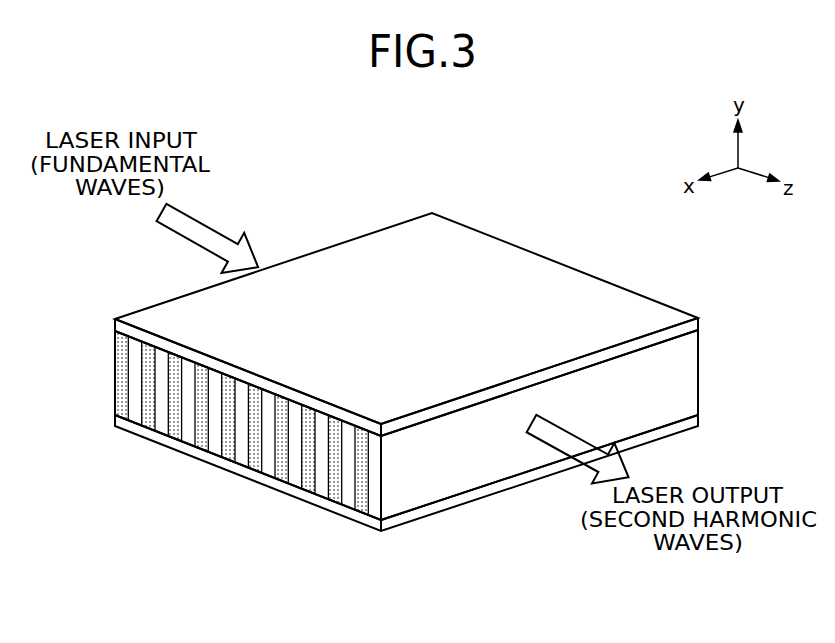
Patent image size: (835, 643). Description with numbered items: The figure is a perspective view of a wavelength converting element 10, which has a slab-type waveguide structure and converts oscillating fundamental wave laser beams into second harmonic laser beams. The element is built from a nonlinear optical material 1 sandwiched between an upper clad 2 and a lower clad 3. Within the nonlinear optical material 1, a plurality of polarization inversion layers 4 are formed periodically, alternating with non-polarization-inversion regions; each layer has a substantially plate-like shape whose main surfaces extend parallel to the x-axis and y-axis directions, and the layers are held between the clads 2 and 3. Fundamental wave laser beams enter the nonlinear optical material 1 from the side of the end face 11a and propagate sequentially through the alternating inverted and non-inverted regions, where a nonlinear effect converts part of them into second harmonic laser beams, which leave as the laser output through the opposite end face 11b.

The wavelength converting element 10 is at (578, 206).
The nonlinear optical material 1 is at (678, 381).
The clad 2 is at (671, 330).
The clad 3 is at (695, 422).
The polarization inversion layers 4 is at (362, 508).
The end face 11a is at (320, 248).
The end face 11b is at (473, 477).